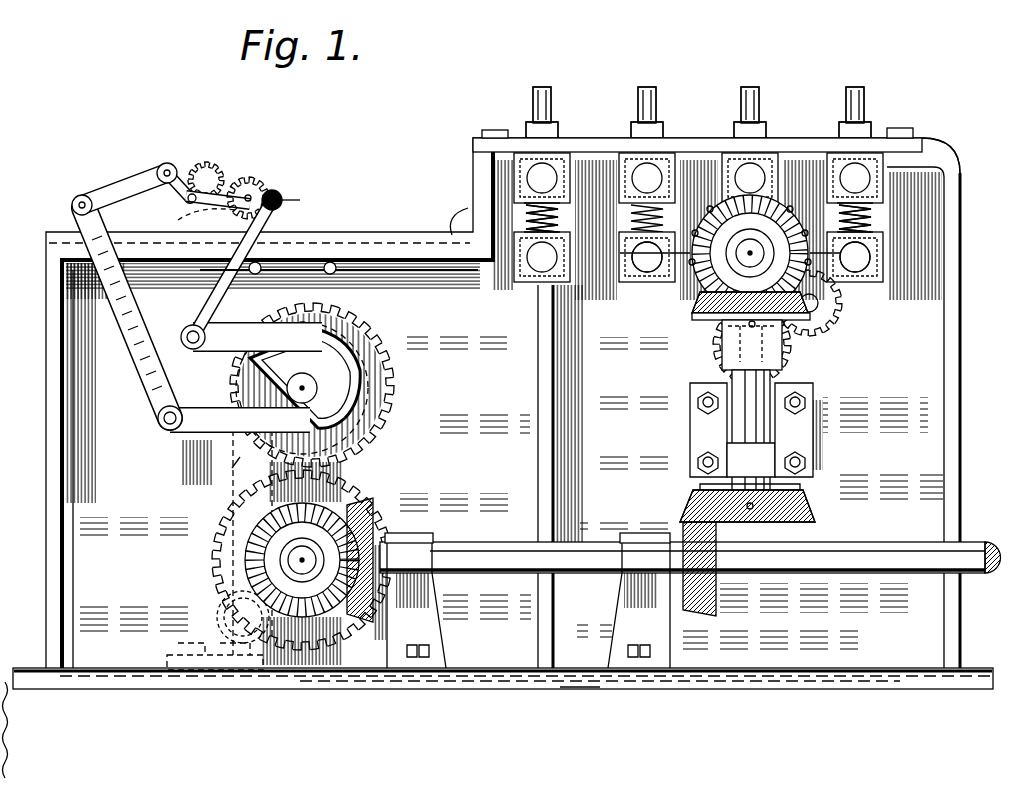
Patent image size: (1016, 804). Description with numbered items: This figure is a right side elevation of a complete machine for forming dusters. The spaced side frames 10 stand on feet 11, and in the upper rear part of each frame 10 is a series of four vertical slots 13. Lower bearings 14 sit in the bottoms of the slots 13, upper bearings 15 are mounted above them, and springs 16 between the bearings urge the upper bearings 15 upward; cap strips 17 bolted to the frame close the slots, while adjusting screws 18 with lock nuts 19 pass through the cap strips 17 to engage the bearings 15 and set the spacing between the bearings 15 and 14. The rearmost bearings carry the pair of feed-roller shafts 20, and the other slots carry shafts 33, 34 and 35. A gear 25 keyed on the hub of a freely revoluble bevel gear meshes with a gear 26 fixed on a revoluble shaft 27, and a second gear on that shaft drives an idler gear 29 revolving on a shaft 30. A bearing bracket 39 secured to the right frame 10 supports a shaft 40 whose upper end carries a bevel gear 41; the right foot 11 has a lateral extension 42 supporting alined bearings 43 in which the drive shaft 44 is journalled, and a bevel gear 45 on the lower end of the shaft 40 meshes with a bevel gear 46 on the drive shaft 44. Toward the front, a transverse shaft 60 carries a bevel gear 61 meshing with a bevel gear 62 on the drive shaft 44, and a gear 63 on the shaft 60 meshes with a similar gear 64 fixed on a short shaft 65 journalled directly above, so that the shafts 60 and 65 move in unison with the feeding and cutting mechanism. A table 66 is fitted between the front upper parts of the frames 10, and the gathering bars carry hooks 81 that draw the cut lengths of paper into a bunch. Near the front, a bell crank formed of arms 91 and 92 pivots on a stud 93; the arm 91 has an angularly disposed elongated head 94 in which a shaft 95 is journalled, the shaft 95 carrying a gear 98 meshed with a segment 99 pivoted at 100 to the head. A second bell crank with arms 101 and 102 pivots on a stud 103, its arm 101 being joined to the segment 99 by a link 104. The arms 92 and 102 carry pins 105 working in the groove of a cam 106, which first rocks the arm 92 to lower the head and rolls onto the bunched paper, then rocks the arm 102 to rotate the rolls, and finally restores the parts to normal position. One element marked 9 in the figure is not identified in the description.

The contact screw 9 is at (751, 257).
The side frames 10 is at (928, 458).
The feet 11 is at (798, 686).
The vertical slots 13 is at (524, 222).
The bearings 14 is at (530, 286).
The upper bearings 15 is at (513, 162).
The springs 16 is at (522, 212).
The cap strips 17 is at (922, 140).
The adjusting screws 18 is at (637, 94).
The lock nuts 19 is at (632, 128).
The shafts 20 is at (872, 177).
The gear 25 is at (792, 230).
The gear 26 is at (716, 345).
The revoluble shaft 27 is at (725, 363).
The idler gear 29 is at (832, 336).
The shaft 30 is at (840, 315).
The shaft 33 is at (756, 176).
The shafts 34 is at (620, 170).
The shafts 35 is at (536, 171).
The bearing bracket 39 is at (802, 430).
The shaft 40 is at (745, 418).
The bevel gear 41 is at (708, 320).
The lateral extension 42 is at (582, 687).
The bearings 43 is at (412, 542).
The shaft 44 is at (1000, 522).
The bevel gear 45 is at (806, 514).
The bevel gear 46 is at (716, 600).
The transverse shaft 60 is at (300, 560).
The bevel gear 61 is at (248, 584).
The bevel gear 62 is at (366, 507).
The gear 63 is at (240, 518).
The gear 64 is at (246, 460).
The short shaft 65 is at (320, 386).
The table 66 is at (352, 232).
The hooks 81 is at (452, 216).
The arm 91 is at (214, 296).
The arm 92 is at (214, 353).
The stud 93 is at (185, 331).
The elongated head 94 is at (285, 200).
The shaft 95 is at (276, 195).
The gear 98 is at (251, 188).
The segment 99 is at (208, 172).
The pivot 100 is at (190, 204).
The arm 101 is at (150, 396).
The arm 102 is at (225, 434).
The stud 103 is at (158, 423).
The link 104 is at (124, 176).
The pins 105 is at (333, 335).
The cam 106 is at (357, 404).